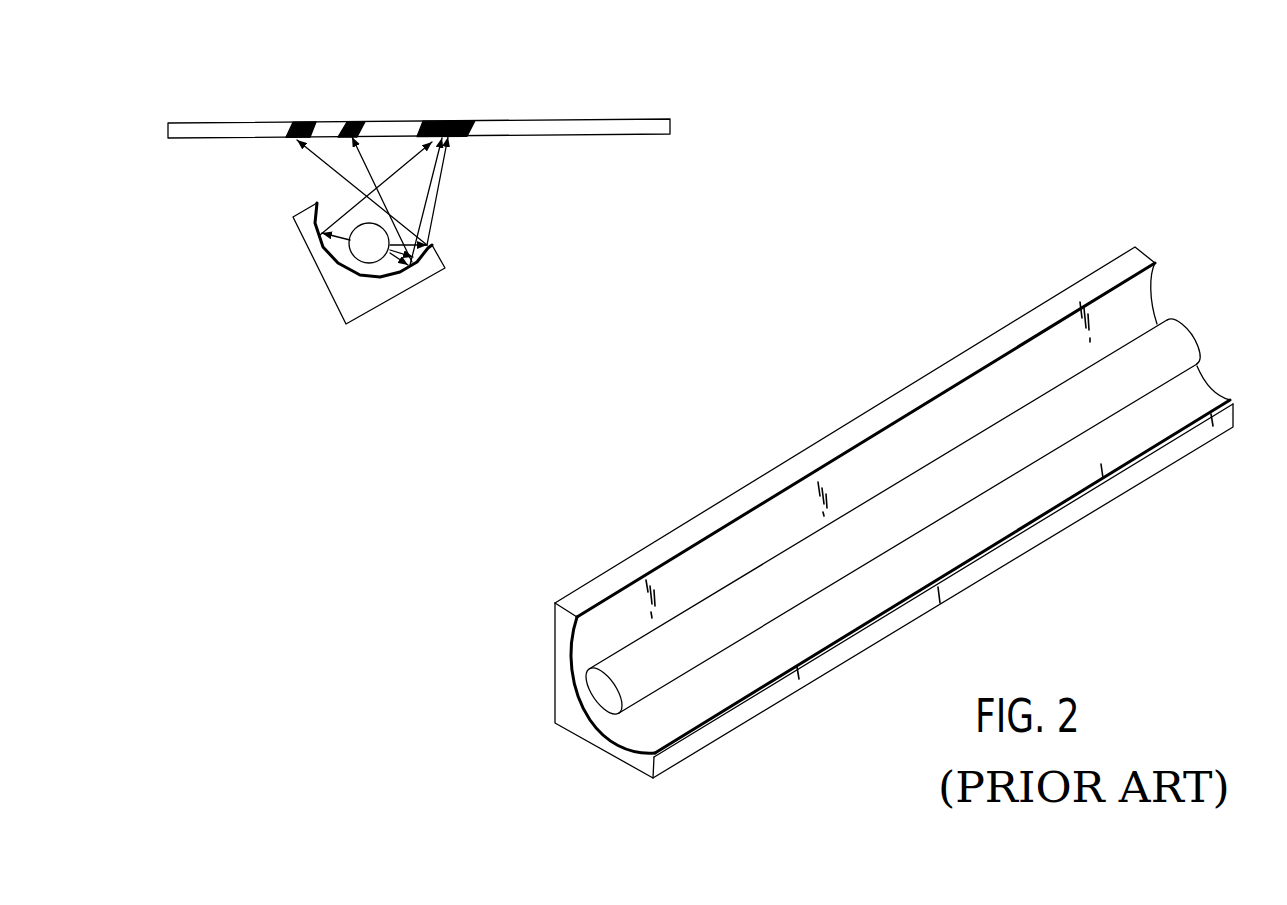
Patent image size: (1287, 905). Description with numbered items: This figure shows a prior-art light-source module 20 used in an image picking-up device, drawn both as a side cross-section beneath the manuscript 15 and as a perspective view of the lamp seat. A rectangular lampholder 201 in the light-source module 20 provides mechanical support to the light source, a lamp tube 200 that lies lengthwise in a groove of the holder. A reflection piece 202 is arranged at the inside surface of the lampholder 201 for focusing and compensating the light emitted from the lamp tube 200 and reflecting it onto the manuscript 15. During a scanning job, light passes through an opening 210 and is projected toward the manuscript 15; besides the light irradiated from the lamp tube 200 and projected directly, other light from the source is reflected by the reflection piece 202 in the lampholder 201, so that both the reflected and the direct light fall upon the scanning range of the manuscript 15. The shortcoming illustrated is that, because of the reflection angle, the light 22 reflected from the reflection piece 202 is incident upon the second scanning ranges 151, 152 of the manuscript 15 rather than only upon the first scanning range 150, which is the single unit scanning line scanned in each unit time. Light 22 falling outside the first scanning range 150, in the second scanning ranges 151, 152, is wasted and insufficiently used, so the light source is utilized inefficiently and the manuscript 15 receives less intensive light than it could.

The manuscript 15 is at (587, 127).
The first scanning range 150 is at (448, 123).
The second scanning range 151 is at (355, 121).
The second scanning range 152 is at (303, 121).
The light 22 is at (362, 169).
The opening 210 is at (413, 214).
The light-source module 20 is at (707, 490).
The lamp tube 200 is at (362, 247).
The lampholder 201 is at (347, 303).
The reflection piece 202 is at (385, 277).